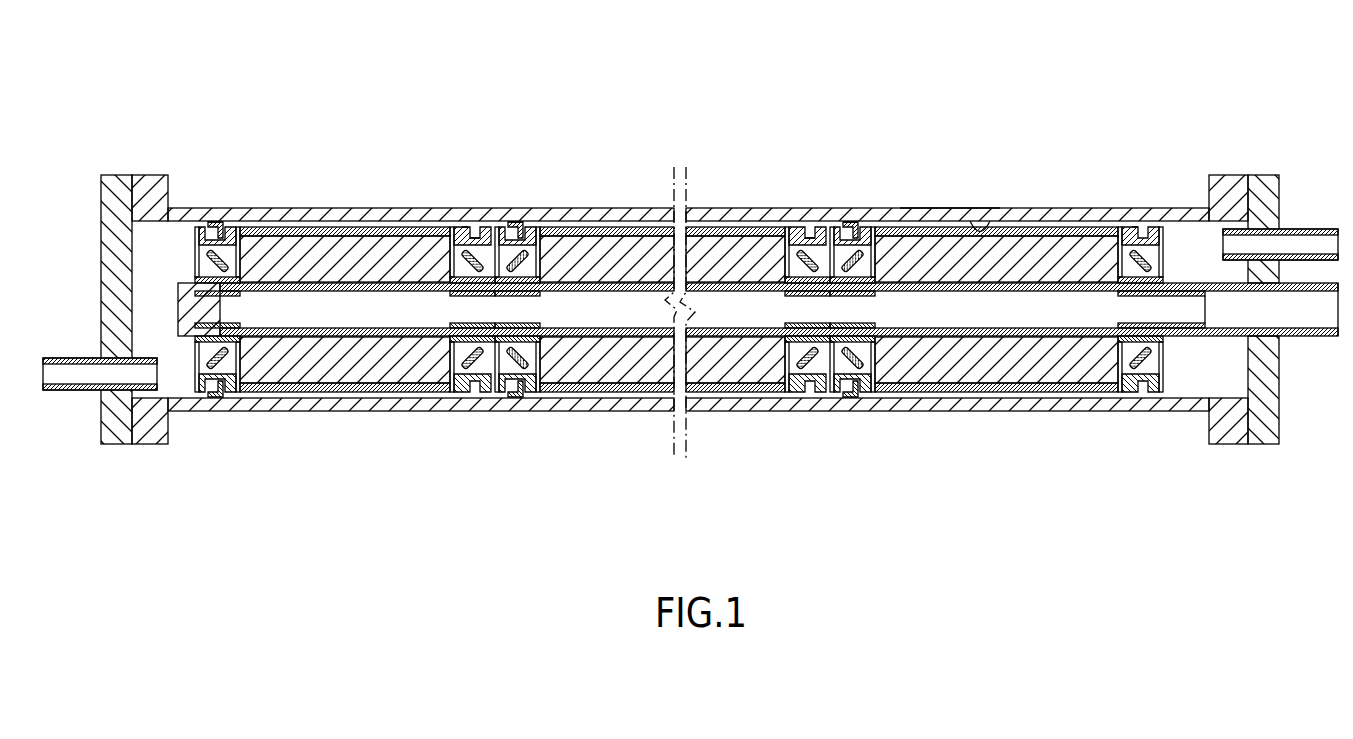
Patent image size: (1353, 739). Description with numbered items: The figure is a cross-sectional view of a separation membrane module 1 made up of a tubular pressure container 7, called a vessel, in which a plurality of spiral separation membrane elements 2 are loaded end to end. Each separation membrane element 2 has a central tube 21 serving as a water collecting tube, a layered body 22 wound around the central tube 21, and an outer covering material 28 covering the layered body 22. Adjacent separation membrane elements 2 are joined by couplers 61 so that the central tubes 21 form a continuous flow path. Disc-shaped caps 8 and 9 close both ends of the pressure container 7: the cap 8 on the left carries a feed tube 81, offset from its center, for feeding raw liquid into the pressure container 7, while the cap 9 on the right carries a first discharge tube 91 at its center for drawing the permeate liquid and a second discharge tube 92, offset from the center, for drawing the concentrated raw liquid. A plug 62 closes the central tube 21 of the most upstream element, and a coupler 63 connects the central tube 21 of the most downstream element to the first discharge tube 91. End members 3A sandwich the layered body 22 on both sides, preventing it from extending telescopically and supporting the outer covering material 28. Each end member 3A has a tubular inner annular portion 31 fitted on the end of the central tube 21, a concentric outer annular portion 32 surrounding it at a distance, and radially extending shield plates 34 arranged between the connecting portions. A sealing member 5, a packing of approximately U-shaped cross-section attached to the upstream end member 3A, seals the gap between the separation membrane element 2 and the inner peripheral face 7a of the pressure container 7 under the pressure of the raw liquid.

The separation membrane module 1 is at (910, 118).
The separation membrane element 2 is at (313, 222).
The central tube 21 is at (304, 345).
The layered body 22 is at (400, 255).
The outer covering material 28 is at (376, 388).
The end member 3A is at (226, 224).
The inner annular portion 31 is at (238, 390).
The outer annular portion 32 is at (200, 392).
The shield plate 34 is at (218, 368).
The sealing member 5 is at (217, 225).
The coupler 61 is at (483, 240).
The plug 62 is at (180, 335).
The coupler 63 is at (1135, 332).
The pressure container 7 is at (943, 218).
The inner peripheral face 7a is at (990, 233).
The cap 8 is at (118, 185).
The feed tube 81 is at (72, 392).
The cap 9 is at (1262, 190).
The first discharge tube 91 is at (1313, 337).
The second discharge tube 92 is at (1322, 235).